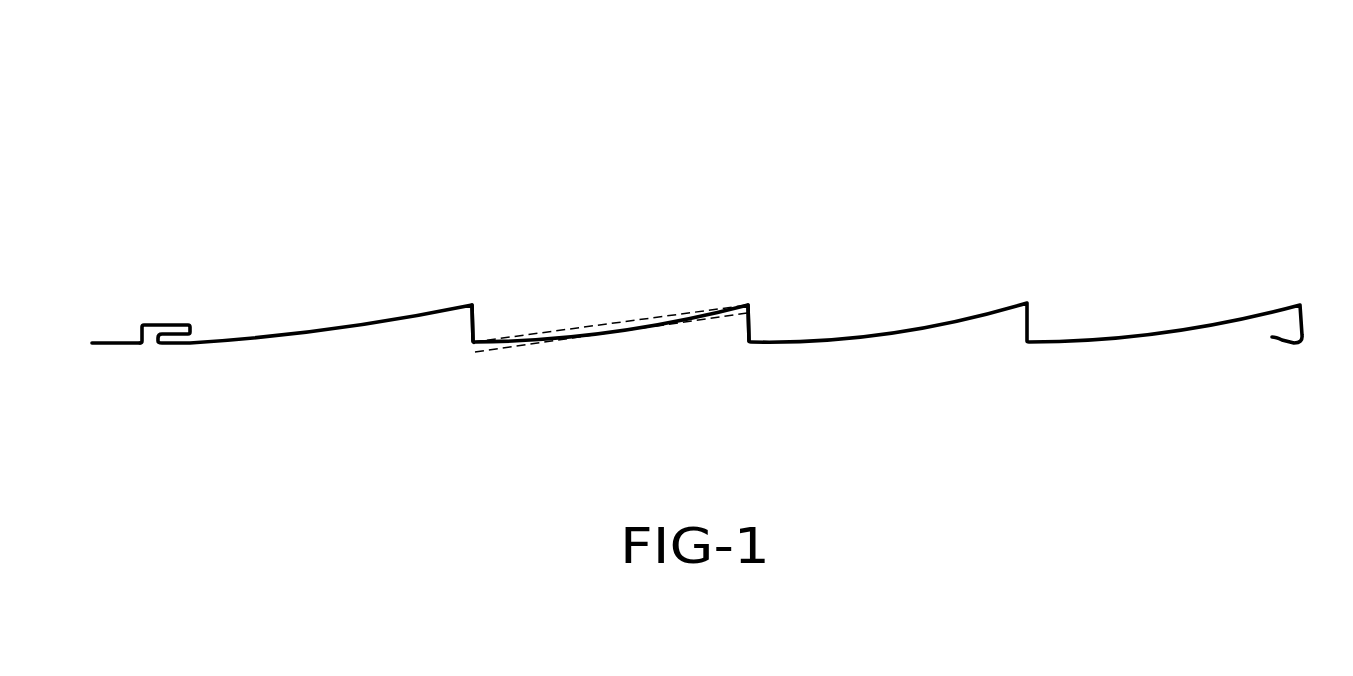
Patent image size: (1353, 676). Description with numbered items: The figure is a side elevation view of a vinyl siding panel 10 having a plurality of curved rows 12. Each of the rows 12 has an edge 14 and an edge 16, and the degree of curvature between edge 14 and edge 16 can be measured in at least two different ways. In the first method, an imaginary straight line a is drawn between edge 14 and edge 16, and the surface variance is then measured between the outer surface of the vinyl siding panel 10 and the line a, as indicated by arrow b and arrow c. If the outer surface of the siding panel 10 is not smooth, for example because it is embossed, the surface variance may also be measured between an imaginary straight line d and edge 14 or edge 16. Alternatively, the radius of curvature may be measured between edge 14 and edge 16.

The vinyl siding panel 10 is at (342, 150).
The curved rows 12 is at (320, 335).
The edge 14 is at (475, 341).
The edge 16 is at (750, 305).
The imaginary straight line a is at (550, 332).
The arrow b is at (608, 312).
The arrow c is at (616, 348).
The imaginary straight line d is at (500, 348).